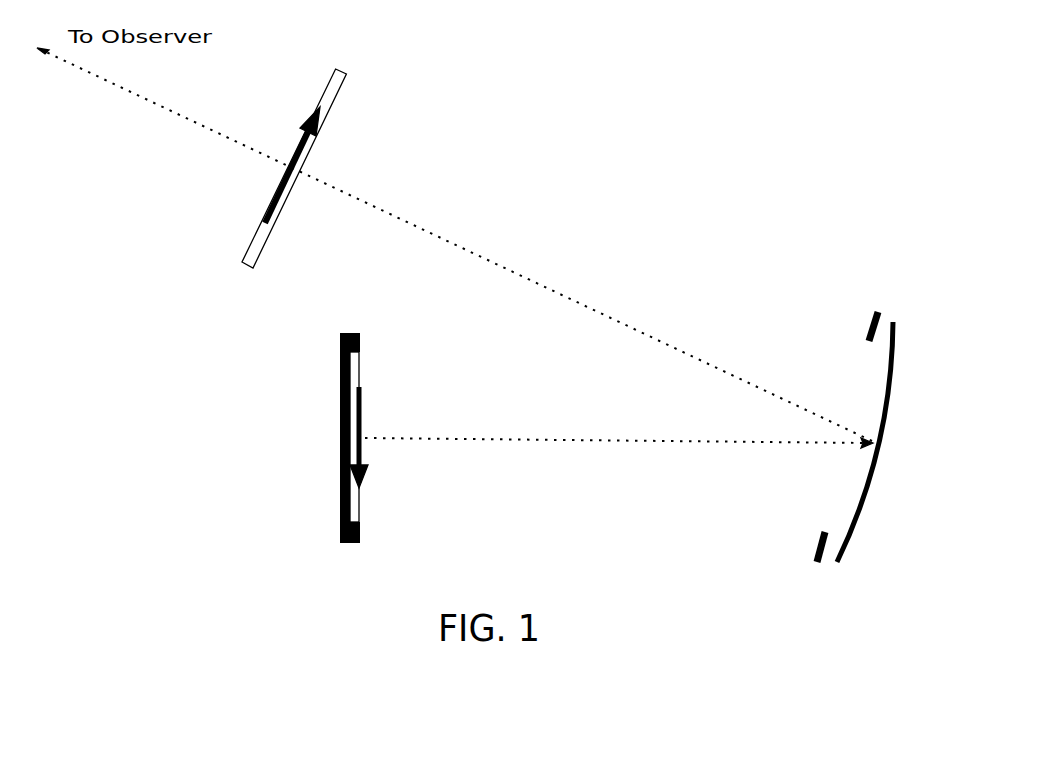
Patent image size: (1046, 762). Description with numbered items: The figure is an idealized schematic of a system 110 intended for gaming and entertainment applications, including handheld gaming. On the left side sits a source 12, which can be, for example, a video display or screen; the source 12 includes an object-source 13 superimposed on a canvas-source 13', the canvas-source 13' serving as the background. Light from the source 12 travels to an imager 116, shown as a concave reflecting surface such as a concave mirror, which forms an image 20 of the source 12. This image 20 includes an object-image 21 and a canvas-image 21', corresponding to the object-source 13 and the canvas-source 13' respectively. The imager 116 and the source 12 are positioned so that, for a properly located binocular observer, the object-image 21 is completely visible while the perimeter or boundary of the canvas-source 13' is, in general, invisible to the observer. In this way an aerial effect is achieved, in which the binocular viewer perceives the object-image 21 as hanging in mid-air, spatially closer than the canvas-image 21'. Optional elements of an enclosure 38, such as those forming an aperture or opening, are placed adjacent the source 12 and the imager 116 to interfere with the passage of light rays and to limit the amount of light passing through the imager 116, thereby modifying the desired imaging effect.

The system 110 is at (812, 88).
The image 20 is at (295, 148).
The object-image 21 is at (282, 165).
The canvas-image 21' is at (281, 258).
The enclosure 38 is at (866, 328).
The source 12 is at (362, 399).
The object-source 13 is at (375, 437).
The canvas-source 13' is at (390, 506).
The imager 116 is at (888, 442).